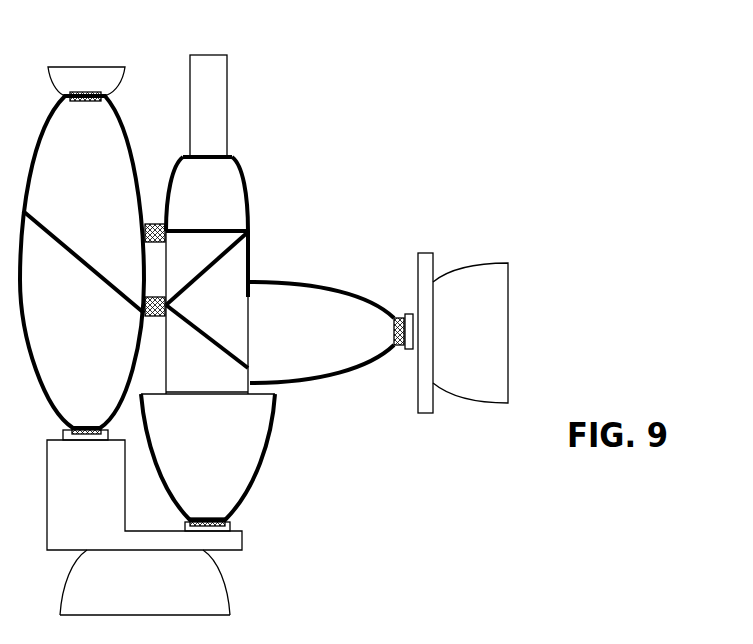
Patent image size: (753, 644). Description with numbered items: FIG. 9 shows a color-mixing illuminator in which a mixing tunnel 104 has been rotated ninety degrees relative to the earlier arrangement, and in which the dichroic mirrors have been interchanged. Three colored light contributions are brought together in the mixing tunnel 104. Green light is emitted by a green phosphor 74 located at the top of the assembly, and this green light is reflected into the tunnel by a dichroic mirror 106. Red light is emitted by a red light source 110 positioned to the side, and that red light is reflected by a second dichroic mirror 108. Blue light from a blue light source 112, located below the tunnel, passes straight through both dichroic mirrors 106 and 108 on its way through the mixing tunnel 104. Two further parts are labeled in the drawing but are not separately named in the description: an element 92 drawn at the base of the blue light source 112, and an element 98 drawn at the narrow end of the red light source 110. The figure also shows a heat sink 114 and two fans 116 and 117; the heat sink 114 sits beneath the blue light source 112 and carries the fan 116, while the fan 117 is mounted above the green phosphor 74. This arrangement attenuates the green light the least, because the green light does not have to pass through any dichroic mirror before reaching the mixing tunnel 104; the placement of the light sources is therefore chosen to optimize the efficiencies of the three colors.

The green phosphor 74 is at (86, 103).
The light source 92 is at (202, 518).
The light source 98 is at (392, 331).
The mixing tunnel 104 is at (251, 251).
The dichroic mirror 106 is at (217, 263).
The dichroic mirror 108 is at (198, 331).
The red light source 110 is at (376, 287).
The blue light source 112 is at (276, 473).
The heat sink 114 is at (105, 494).
The fan 116 is at (163, 600).
The fan 117 is at (89, 70).